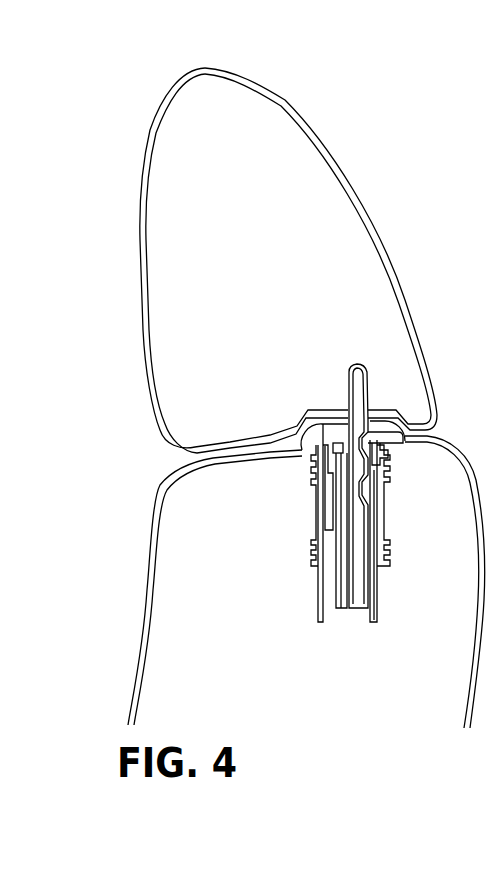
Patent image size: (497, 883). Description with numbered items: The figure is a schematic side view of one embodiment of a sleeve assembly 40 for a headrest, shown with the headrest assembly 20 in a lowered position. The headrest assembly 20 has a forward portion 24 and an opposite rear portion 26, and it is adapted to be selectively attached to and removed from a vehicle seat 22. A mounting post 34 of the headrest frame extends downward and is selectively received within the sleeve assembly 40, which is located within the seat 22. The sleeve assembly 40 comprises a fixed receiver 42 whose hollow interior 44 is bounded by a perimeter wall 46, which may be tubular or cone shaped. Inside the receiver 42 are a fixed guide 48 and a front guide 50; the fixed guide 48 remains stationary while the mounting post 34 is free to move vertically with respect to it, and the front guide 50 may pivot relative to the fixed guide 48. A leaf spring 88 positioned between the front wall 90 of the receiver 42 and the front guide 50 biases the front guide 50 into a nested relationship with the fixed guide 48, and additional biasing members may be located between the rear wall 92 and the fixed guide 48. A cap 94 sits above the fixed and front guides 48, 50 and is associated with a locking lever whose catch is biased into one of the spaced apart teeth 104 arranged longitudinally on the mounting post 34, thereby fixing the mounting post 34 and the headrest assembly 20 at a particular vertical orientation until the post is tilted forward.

The headrest assembly 20 is at (343, 90).
The vehicle seat 22 is at (167, 647).
The forward portion 24 is at (149, 128).
The rear portion 26 is at (383, 233).
The mounting post 34 is at (348, 372).
The sleeve assembly 40 is at (316, 629).
The fixed receiver 42 is at (312, 532).
The hollow interior 44 is at (318, 575).
The perimeter wall 46 is at (318, 505).
The fixed guide 48 is at (378, 615).
The front guide 50 is at (374, 510).
The leaf spring 88 is at (316, 495).
The front wall 90 is at (318, 600).
The rear wall 92 is at (386, 537).
The cap 94 is at (392, 420).
The teeth 104 is at (369, 472).